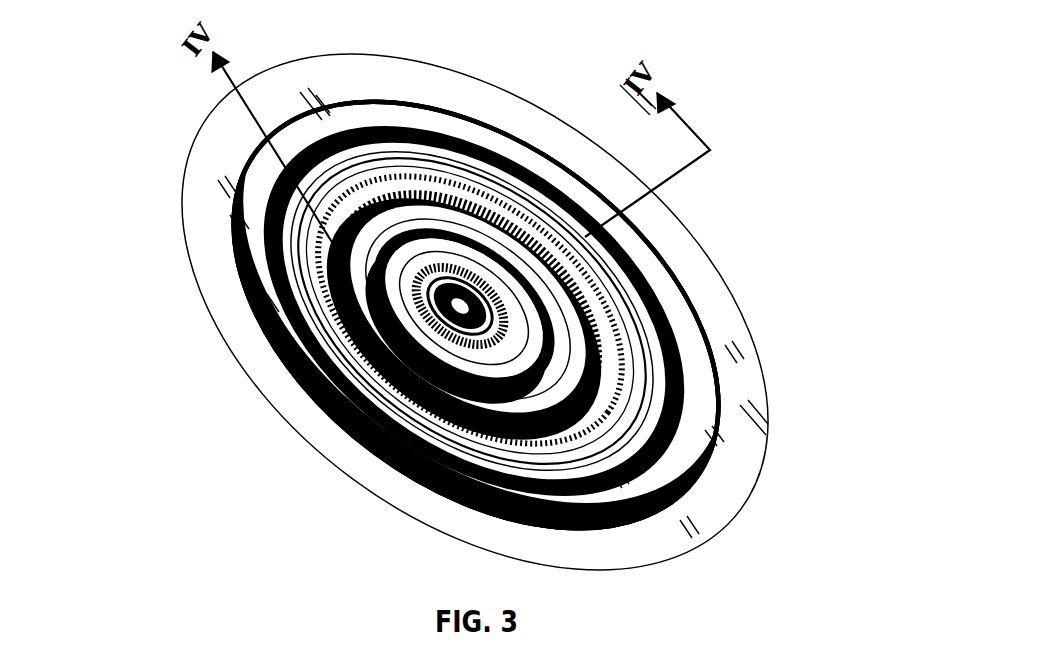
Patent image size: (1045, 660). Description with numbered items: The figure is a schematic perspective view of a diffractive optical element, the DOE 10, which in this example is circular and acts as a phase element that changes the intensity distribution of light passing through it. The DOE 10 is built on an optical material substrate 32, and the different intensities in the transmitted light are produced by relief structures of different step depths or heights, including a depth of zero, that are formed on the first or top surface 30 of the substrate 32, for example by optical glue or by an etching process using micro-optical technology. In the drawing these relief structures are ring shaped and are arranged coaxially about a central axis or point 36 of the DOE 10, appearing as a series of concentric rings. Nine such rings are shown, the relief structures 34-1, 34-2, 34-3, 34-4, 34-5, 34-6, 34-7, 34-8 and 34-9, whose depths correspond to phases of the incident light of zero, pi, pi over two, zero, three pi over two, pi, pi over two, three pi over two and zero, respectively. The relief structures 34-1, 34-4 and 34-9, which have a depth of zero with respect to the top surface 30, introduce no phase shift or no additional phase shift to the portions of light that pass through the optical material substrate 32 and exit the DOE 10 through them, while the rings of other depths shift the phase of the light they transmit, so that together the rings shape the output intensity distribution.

The diffractive optical element (DOE) 10 is at (163, 286).
The first or top surface 30 is at (748, 445).
The optical material substrate 32 is at (752, 488).
The ring shaped relief structure 34-1 is at (482, 293).
The ring shaped relief structure 34-2 is at (400, 251).
The ring shaped relief structure 34-3 is at (467, 283).
The ring shaped relief structure 34-4 is at (615, 222).
The ring shaped relief structure 34-5 is at (450, 471).
The ring shaped relief structure 34-6 is at (698, 532).
The ring shaped relief structure 34-7 is at (680, 355).
The ring shaped relief structure 34-8 is at (653, 277).
The ring shaped relief structure 34-9 is at (698, 303).
The axis or point 36 is at (487, 338).